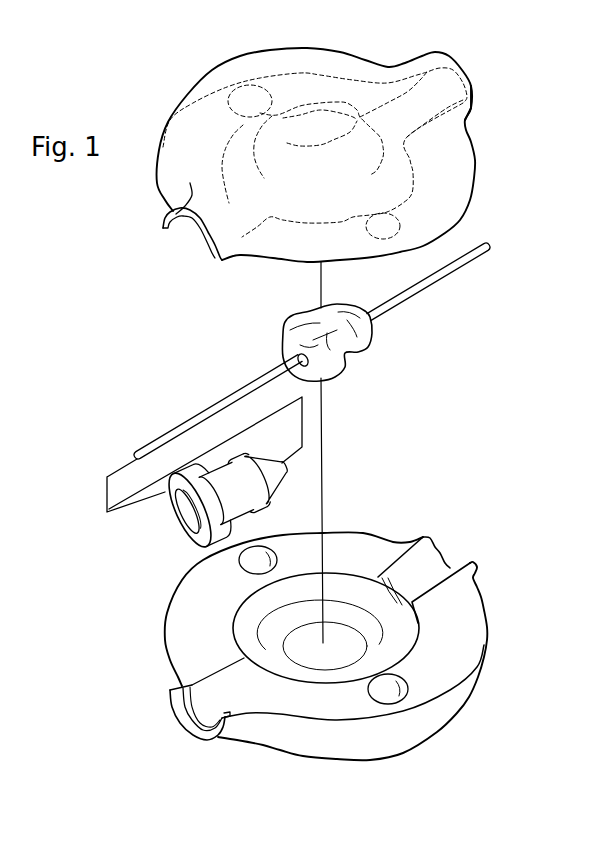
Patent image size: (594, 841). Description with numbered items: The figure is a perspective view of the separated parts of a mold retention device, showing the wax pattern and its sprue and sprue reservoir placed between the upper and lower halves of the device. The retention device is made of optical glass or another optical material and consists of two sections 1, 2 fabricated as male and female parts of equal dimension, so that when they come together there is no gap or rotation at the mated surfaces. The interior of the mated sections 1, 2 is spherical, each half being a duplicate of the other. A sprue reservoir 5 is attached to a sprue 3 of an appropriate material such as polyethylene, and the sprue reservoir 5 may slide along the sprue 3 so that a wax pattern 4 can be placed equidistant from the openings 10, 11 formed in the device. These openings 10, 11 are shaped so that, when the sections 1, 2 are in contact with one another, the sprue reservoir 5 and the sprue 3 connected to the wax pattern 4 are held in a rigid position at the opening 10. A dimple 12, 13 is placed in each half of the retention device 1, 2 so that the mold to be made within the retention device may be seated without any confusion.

The retention device section 1 is at (327, 47).
The retention device section 2 is at (383, 757).
The sprue 3 is at (247, 382).
The wax pattern 4 is at (345, 353).
The sprue reservoir 5 is at (170, 527).
The opening 10 is at (194, 231).
The opening 11 is at (463, 71).
The dimple 12 is at (341, 638).
The dimple 13 is at (293, 132).